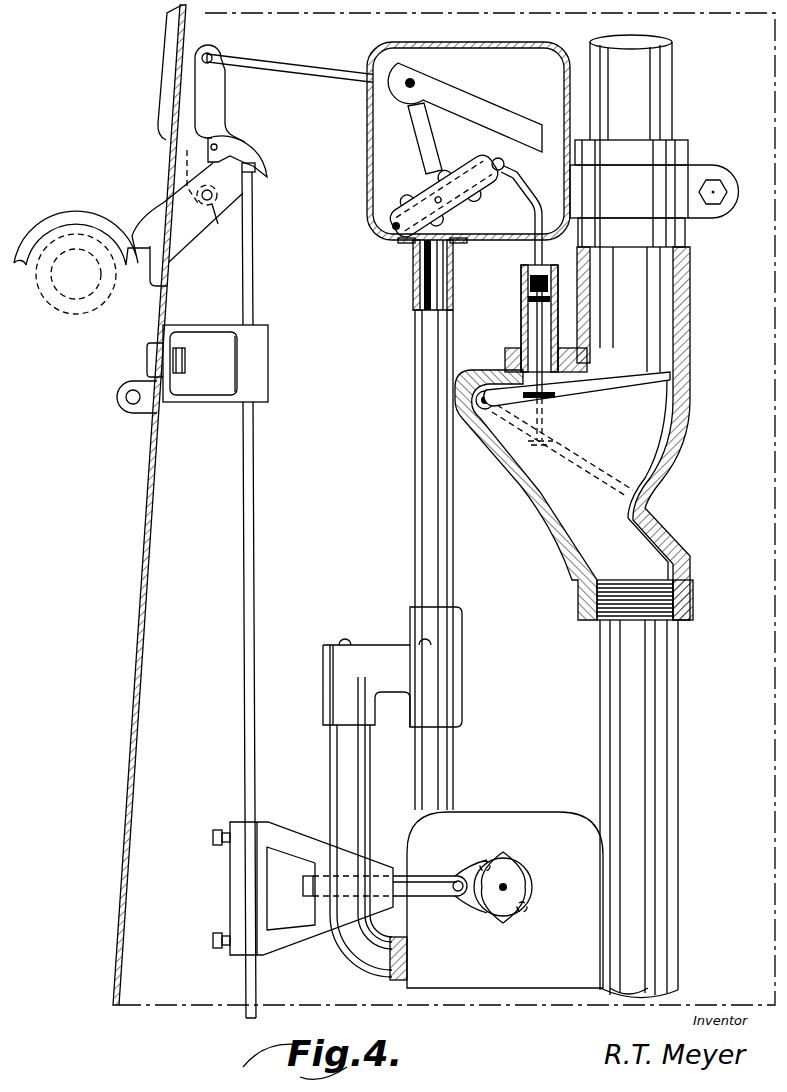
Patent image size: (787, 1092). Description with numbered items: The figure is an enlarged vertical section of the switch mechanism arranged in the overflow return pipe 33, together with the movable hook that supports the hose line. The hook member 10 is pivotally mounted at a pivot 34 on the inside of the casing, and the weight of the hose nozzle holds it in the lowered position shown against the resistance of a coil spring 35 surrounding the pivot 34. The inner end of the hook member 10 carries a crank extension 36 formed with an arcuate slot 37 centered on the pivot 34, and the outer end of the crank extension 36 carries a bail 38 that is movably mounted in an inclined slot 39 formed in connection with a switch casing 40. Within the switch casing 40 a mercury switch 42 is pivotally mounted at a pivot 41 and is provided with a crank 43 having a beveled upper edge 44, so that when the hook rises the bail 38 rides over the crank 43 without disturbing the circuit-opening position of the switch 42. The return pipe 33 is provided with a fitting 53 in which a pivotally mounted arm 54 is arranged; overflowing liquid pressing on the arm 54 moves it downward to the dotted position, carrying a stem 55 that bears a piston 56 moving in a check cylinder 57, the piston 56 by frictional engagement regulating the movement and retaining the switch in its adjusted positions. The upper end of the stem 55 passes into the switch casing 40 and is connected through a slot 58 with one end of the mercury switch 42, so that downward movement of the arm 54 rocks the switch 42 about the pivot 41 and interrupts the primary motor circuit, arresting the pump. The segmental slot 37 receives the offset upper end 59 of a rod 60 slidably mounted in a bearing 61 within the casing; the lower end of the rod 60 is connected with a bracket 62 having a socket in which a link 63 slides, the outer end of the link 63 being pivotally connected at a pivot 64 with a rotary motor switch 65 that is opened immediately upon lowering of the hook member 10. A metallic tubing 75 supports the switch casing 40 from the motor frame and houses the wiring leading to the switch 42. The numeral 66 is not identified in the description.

The hook member 10 is at (58, 327).
The overflow return pipe 33 is at (668, 95).
The pivot 34 is at (220, 217).
The coil spring 35 is at (198, 204).
The crank extension 36 is at (218, 99).
The arcuate slot 37 is at (250, 148).
The bail 38 is at (291, 63).
The inclined slot 39 is at (458, 97).
The switch casing 40 is at (368, 125).
The pivot 41 is at (446, 216).
The mercury switch 42 is at (405, 204).
The crank 43 is at (418, 143).
The beveled upper edge 44 is at (413, 92).
The fitting 53 is at (688, 373).
The pivotally mounted arm 54 is at (596, 389).
The stem 55 is at (536, 328).
The piston 56 is at (527, 302).
The check cylinder 57 is at (521, 283).
The slot 58 is at (497, 163).
The offset upper end 59 is at (258, 166).
The rod 60 is at (255, 246).
The bearing 61 is at (269, 358).
The bracket 62 is at (240, 893).
The link 63 is at (418, 897).
The pivotal connection 64 is at (453, 878).
The rotary motor switch 65 is at (527, 862).
The pin 66 is at (211, 147).
The metallic tubing 75 is at (415, 478).